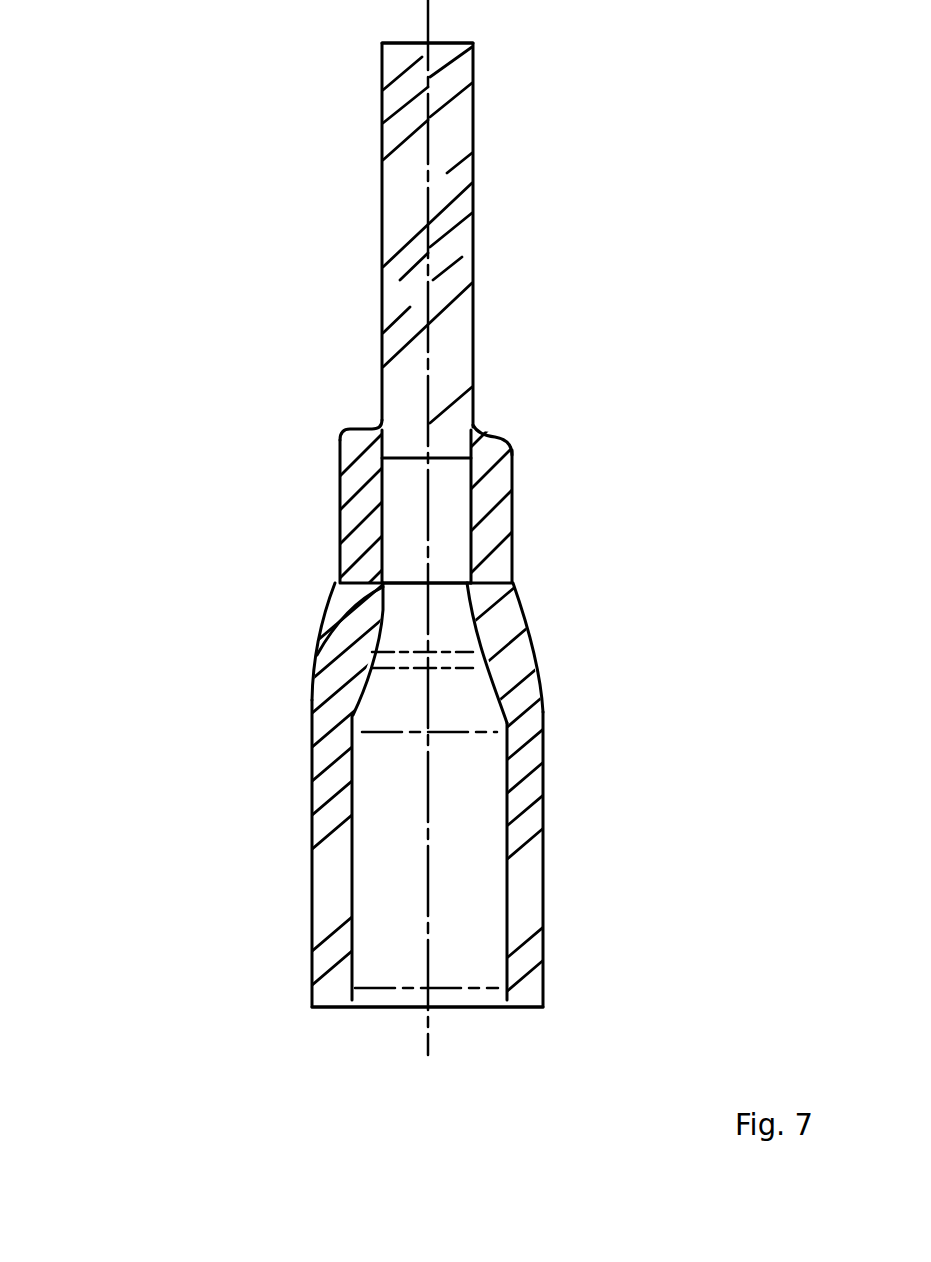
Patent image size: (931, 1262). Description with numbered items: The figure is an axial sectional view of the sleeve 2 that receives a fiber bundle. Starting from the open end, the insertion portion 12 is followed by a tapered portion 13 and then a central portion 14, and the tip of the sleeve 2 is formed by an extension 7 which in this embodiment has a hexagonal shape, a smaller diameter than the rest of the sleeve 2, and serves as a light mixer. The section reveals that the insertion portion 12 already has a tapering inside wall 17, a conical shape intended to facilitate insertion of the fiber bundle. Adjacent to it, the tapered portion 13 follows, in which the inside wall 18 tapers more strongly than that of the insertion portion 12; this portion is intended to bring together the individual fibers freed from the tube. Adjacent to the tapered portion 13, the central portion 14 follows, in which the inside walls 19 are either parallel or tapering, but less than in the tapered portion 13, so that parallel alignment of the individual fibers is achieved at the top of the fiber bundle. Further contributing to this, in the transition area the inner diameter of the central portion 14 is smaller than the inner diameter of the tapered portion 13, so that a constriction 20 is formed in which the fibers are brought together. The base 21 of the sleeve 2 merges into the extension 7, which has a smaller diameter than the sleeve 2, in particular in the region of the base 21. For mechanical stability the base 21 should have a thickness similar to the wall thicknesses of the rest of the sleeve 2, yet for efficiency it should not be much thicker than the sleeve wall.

The sleeve 2 is at (268, 415).
The extension 7 is at (474, 200).
The insertion portion 12 is at (544, 800).
The tapered portion 13 is at (316, 650).
The central portion 14 is at (339, 517).
The tapering inside wall 17 is at (352, 832).
The inside wall 18 is at (390, 652).
The inside walls 19 is at (383, 512).
The constriction 20 is at (470, 583).
The base 21 is at (457, 437).